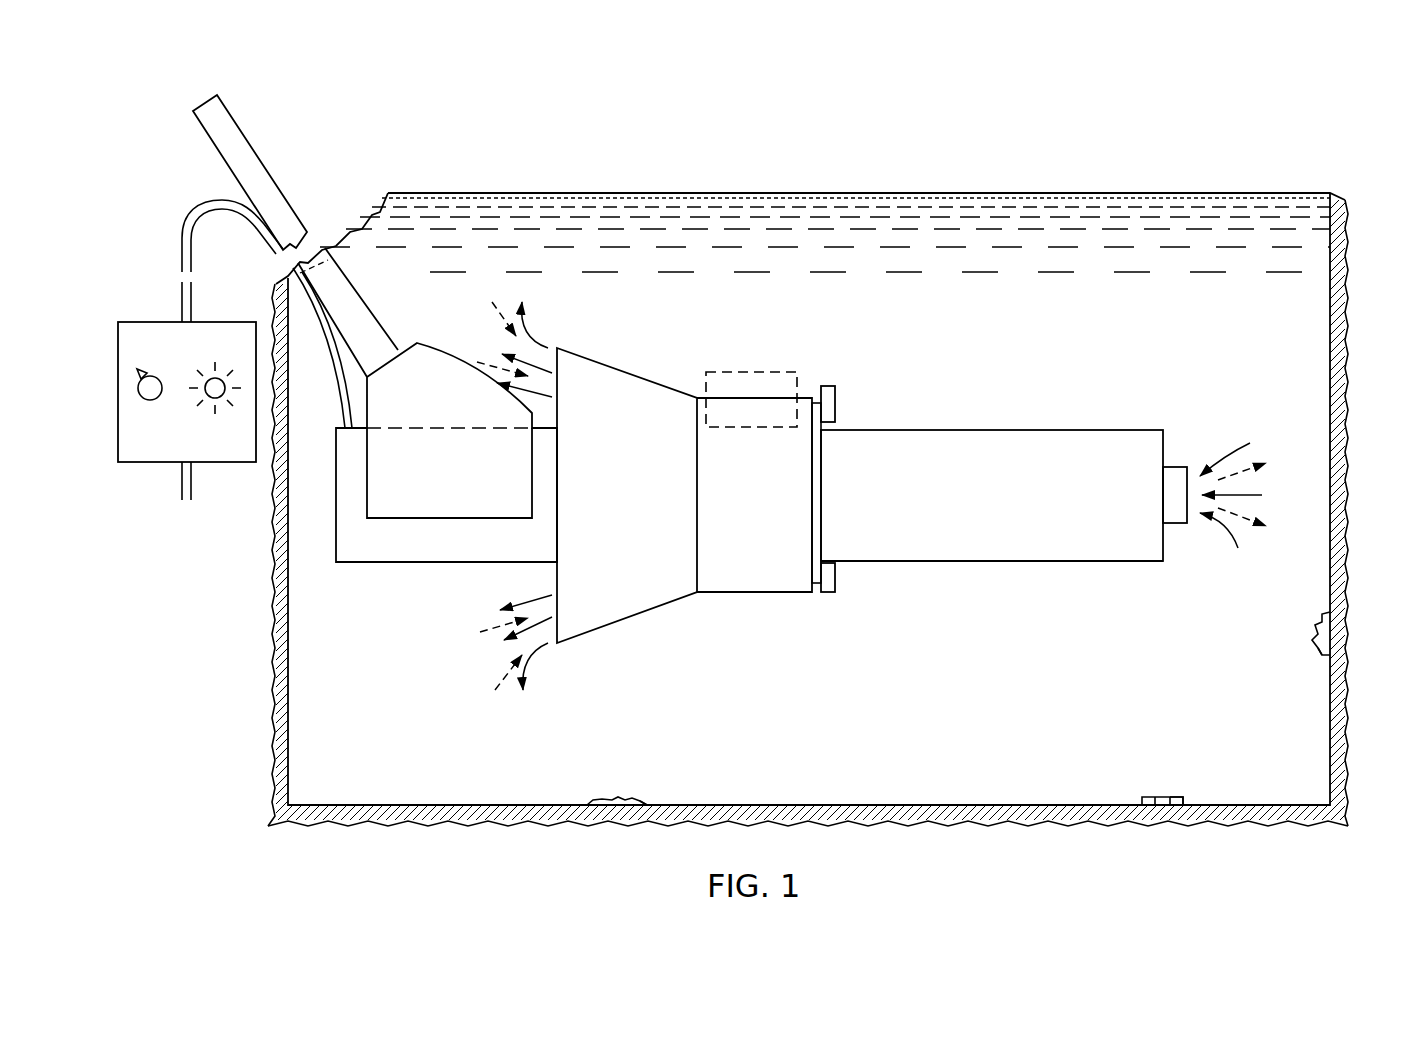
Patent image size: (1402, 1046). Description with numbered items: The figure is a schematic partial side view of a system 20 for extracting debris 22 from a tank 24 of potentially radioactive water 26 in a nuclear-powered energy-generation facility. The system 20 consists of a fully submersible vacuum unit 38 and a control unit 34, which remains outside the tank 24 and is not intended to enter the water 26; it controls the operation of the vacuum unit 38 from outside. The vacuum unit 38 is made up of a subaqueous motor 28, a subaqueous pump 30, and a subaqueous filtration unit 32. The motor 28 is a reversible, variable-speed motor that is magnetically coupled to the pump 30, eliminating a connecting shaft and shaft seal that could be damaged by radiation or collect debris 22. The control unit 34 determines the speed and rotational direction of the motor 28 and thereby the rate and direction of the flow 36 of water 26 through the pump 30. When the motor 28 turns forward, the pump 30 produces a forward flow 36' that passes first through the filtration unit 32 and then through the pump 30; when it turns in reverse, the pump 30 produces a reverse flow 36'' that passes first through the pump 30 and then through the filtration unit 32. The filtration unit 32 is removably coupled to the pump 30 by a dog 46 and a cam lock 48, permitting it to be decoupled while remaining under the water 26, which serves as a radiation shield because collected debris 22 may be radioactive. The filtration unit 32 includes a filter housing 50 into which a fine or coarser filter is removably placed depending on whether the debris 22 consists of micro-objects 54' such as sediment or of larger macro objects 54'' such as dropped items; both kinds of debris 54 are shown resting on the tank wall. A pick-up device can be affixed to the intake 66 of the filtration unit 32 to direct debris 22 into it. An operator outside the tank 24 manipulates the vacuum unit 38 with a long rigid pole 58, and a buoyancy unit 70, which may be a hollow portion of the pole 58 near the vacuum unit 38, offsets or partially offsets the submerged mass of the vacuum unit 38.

The system 20 is at (953, 870).
The debris 22 is at (623, 808).
The tank 24 is at (1207, 113).
The water 26 is at (844, 208).
The motor 28 is at (370, 563).
The pump 30 is at (747, 592).
The filtration unit 32 is at (1005, 562).
The control unit 34 is at (122, 434).
The flow 36 is at (879, 497).
The forward flow 36' is at (919, 496).
The reverse flow 36'' is at (854, 496).
The vacuum unit 38 is at (1107, 345).
The dog 46 is at (826, 594).
The cam lock 48 is at (812, 402).
The filter housing 50 is at (960, 434).
The debris 54 is at (946, 697).
The micro-objects 54' is at (981, 728).
The macro objects 54'' is at (1207, 777).
The rigid pole 58 is at (250, 130).
The intake 66 is at (1177, 464).
The buoyancy unit 70 is at (385, 330).